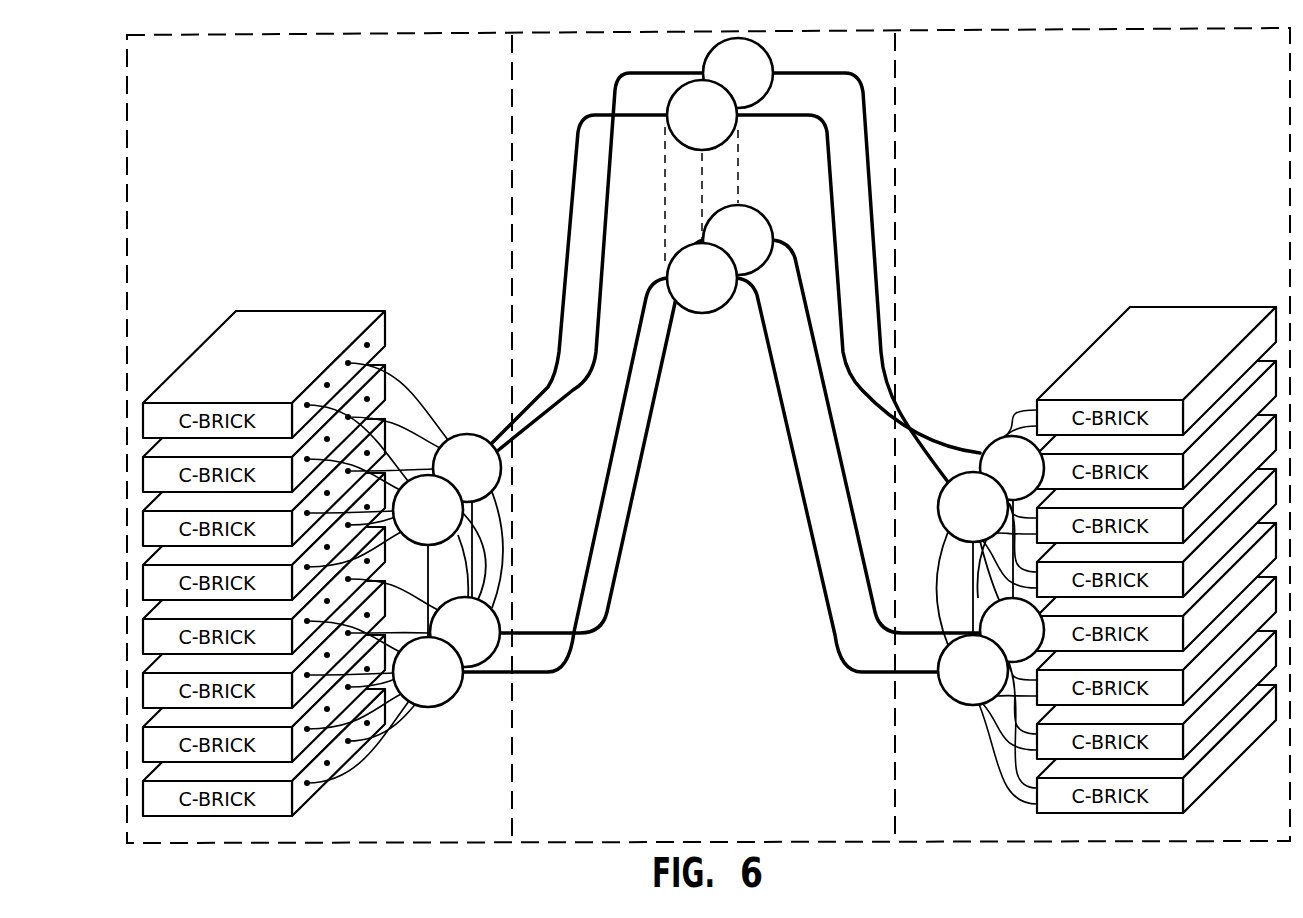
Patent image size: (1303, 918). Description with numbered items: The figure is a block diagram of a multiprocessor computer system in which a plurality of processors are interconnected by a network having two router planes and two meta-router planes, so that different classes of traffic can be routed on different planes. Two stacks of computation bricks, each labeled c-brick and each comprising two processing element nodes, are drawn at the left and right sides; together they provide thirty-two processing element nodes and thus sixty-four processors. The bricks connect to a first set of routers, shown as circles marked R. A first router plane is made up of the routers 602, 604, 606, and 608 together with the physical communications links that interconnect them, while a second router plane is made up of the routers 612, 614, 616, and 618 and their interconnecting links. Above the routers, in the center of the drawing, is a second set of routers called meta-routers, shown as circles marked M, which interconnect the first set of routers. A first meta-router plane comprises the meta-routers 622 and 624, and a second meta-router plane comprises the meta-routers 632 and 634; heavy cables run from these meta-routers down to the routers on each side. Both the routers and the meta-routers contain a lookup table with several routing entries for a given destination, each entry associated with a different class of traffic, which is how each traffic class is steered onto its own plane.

The router 602 is at (455, 695).
The router 604 is at (950, 697).
The router 606 is at (457, 528).
The router 608 is at (939, 512).
The router 612 is at (498, 621).
The router 614 is at (982, 619).
The router 616 is at (500, 471).
The router 618 is at (987, 449).
The meta-router 622 is at (720, 307).
The meta-router 624 is at (725, 138).
The meta-router 632 is at (752, 211).
The meta-router 634 is at (771, 62).